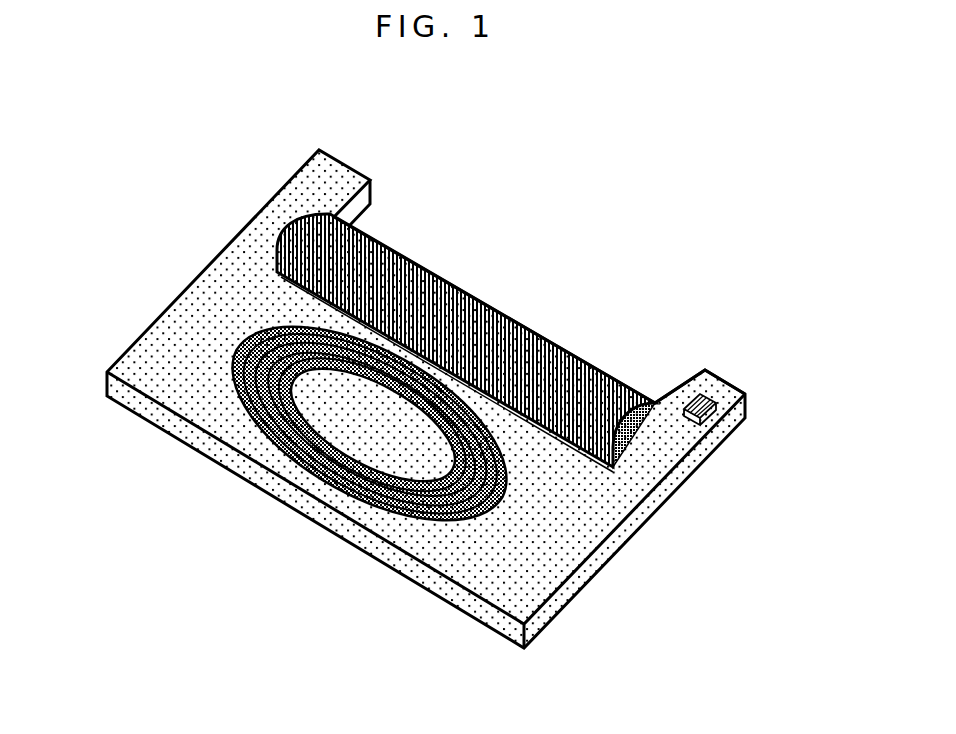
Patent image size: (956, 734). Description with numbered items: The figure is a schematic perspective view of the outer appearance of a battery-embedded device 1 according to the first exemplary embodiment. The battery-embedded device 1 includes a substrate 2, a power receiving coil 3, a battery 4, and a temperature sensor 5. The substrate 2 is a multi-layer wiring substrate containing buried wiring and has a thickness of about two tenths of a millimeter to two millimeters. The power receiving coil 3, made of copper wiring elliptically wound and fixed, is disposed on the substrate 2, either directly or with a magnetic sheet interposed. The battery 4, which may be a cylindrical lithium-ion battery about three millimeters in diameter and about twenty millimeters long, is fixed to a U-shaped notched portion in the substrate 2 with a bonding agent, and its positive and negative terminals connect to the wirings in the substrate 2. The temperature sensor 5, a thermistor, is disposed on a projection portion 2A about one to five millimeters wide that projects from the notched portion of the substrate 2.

The battery-embedded device 1 is at (435, 374).
The substrate 2 is at (435, 375).
The projection portion 2A is at (308, 197).
The power receiving coil 3 is at (285, 456).
The battery 4 is at (557, 357).
The temperature sensor 5 is at (697, 386).